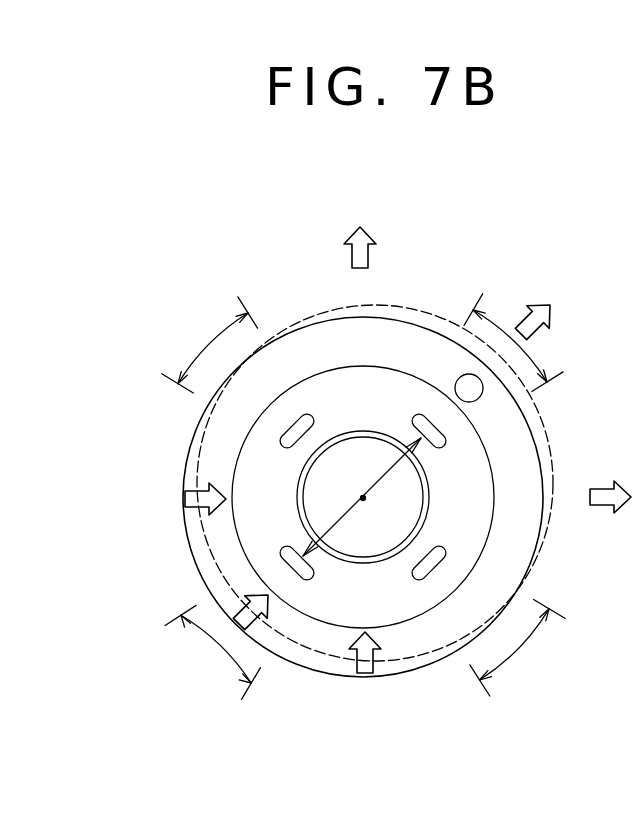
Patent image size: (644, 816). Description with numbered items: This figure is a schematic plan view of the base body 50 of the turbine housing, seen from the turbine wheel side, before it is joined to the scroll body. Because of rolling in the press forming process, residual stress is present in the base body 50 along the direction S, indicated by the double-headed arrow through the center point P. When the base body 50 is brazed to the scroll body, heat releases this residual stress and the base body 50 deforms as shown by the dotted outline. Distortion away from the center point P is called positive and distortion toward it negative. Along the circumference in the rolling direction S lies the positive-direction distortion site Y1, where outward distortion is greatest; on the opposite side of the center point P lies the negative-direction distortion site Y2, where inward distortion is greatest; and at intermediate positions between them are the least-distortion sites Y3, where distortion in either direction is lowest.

The base body 50 is at (457, 232).
The direction of rolling S is at (387, 470).
The center point P is at (366, 502).
The positive-direction distortion site Y1 is at (530, 358).
The negative-direction distortion site Y2 is at (215, 655).
The least-distortion sites Y3 is at (208, 342).